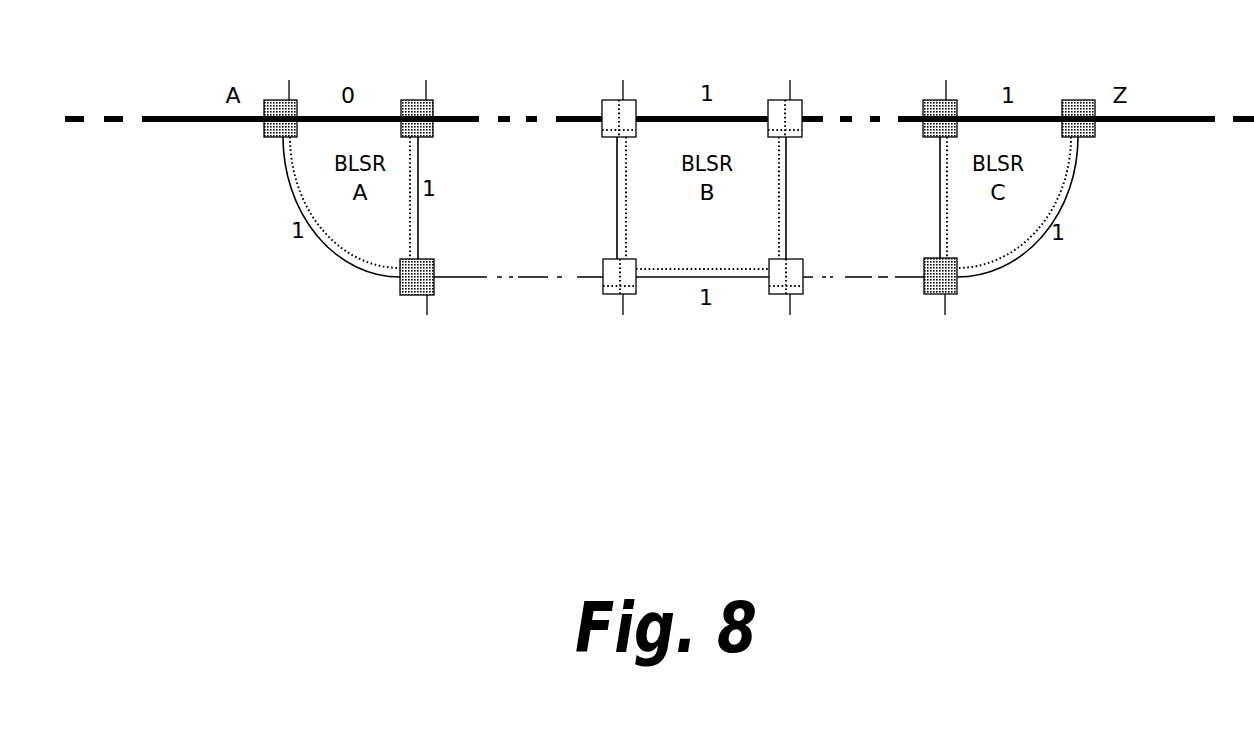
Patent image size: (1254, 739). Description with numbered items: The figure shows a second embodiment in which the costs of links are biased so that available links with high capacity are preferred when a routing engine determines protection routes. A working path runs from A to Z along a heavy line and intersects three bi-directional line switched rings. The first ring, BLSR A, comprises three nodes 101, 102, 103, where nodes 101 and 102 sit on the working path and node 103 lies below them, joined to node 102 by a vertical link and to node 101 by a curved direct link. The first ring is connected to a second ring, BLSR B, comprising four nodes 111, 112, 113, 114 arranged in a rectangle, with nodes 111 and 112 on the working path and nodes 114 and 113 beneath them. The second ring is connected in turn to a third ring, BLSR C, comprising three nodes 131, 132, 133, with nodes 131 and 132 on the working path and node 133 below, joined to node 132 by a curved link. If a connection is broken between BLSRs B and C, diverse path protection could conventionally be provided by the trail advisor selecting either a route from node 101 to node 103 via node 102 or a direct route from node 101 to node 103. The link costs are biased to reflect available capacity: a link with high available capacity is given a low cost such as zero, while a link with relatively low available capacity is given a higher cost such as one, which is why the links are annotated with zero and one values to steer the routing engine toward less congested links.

The node of first BLSR A 101 is at (283, 100).
The node of first BLSR A 102 is at (420, 100).
The node of first BLSR A 103 is at (410, 295).
The node of second BLSR B 111 is at (615, 100).
The node of second BLSR B 112 is at (782, 100).
The node of second BLSR B 113 is at (780, 294).
The node of second BLSR B 114 is at (613, 294).
The node of third BLSR C 131 is at (937, 100).
The node of third BLSR C 132 is at (1072, 100).
The node of third BLSR C 133 is at (933, 294).